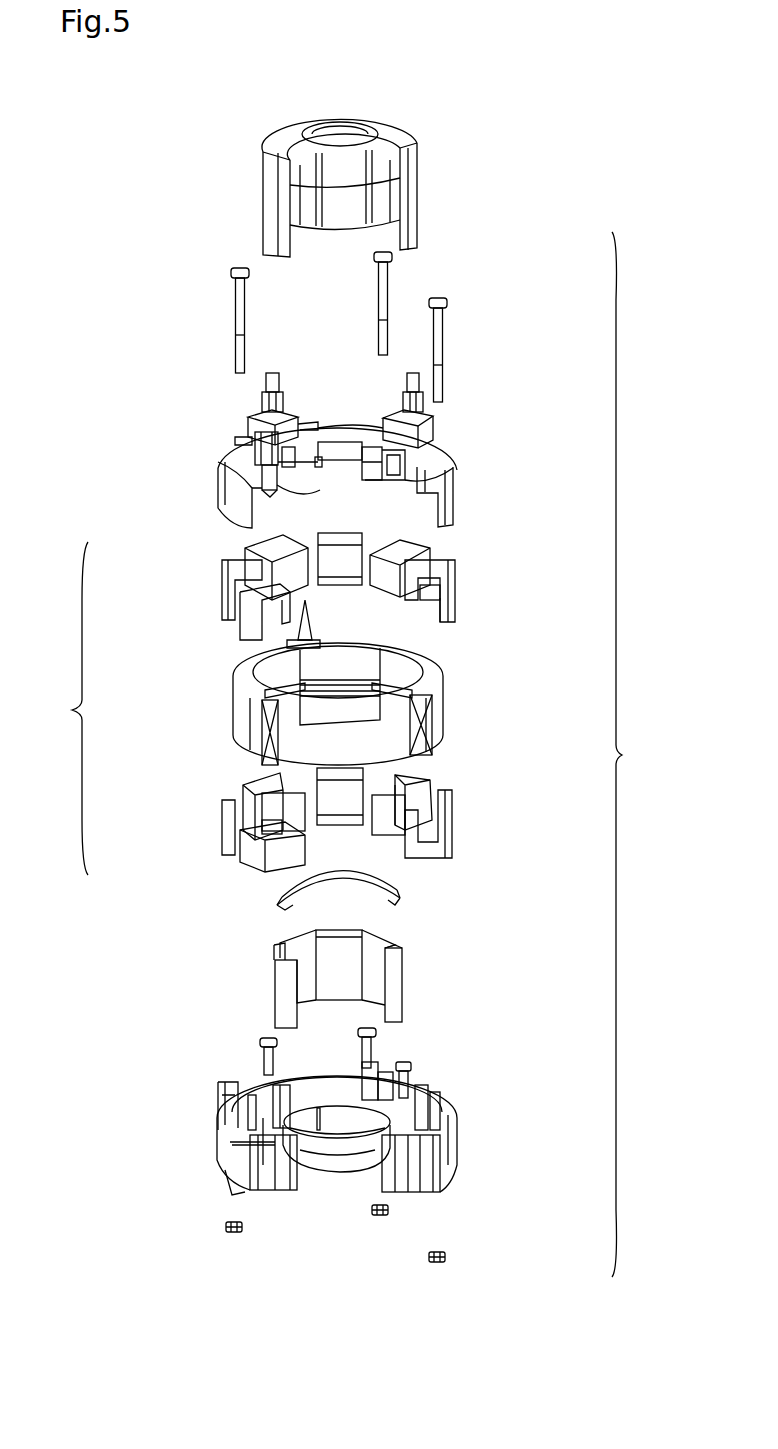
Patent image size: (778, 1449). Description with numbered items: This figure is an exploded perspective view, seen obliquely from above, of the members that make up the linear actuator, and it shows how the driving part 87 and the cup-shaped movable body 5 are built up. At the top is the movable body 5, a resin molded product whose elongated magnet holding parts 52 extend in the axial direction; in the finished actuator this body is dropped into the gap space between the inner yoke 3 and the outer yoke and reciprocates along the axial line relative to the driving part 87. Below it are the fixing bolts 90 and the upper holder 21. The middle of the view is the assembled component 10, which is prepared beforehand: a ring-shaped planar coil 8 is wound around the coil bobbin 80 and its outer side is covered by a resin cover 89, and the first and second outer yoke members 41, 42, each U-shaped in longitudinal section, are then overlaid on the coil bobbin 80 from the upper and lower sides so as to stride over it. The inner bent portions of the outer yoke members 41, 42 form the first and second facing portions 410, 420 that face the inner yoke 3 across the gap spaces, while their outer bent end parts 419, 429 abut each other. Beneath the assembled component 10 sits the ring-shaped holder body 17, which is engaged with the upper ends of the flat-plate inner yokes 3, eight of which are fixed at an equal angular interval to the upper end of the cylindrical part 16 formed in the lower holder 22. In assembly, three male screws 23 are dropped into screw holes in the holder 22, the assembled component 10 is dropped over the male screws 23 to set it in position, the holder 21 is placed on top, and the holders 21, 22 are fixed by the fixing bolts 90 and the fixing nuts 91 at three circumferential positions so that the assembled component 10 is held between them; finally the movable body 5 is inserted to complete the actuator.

The movable body 5 is at (455, 118).
The magnet holding parts 52 is at (265, 192).
The fixing bolts 90 is at (240, 310).
The holder 21 is at (447, 490).
The assembled component 10 is at (296, 681).
The outer yoke member 41 is at (460, 532).
The first facing portion 410 is at (407, 602).
The end part 419 is at (447, 628).
The coil bobbin 80 is at (437, 673).
The coil 8 is at (435, 723).
The cover 89 is at (238, 735).
The end part 429 is at (435, 787).
The outer yoke member 42 is at (472, 825).
The second facing portion 420 is at (282, 860).
The holder body 17 is at (403, 888).
The inner yoke 3 is at (425, 968).
The male screws 23 is at (258, 1057).
The holder 22 is at (458, 1137).
The cylindrical part 16 is at (307, 1143).
The fixing nuts 91 is at (243, 1227).
The driving part 87 is at (641, 754).